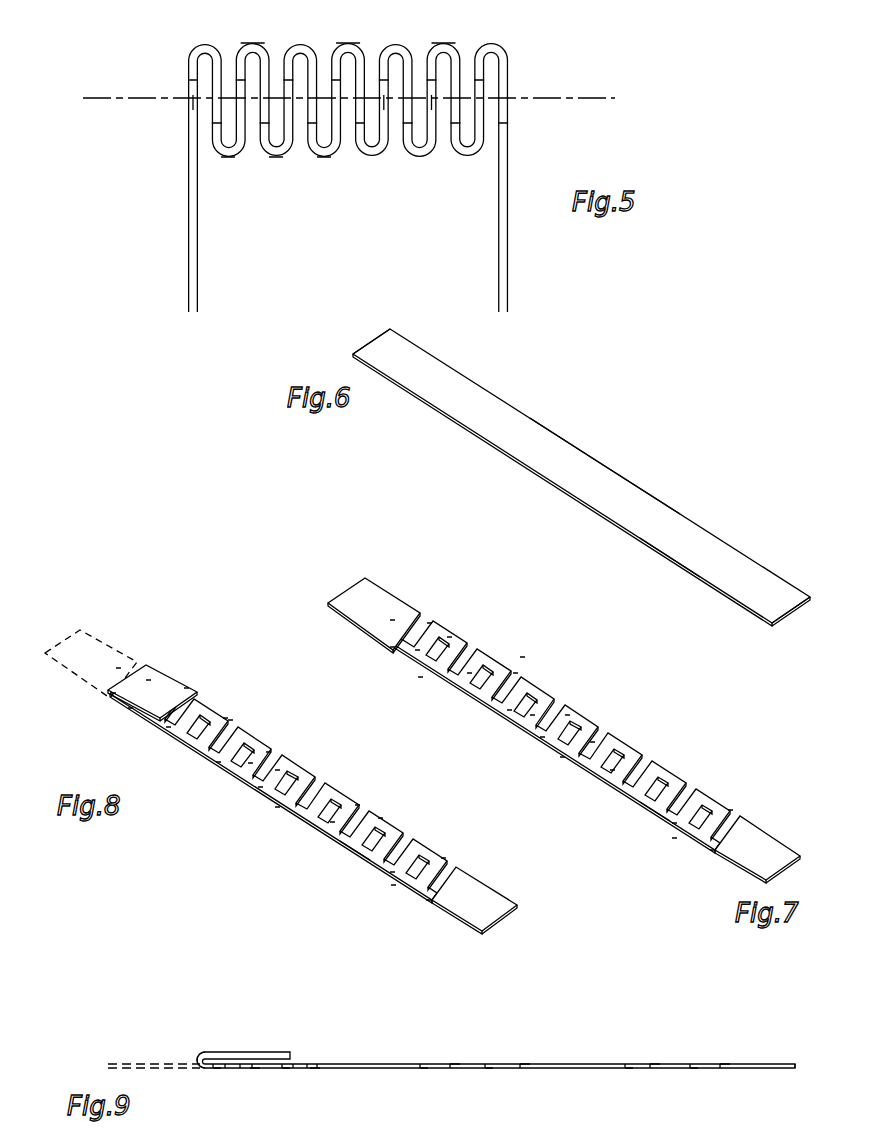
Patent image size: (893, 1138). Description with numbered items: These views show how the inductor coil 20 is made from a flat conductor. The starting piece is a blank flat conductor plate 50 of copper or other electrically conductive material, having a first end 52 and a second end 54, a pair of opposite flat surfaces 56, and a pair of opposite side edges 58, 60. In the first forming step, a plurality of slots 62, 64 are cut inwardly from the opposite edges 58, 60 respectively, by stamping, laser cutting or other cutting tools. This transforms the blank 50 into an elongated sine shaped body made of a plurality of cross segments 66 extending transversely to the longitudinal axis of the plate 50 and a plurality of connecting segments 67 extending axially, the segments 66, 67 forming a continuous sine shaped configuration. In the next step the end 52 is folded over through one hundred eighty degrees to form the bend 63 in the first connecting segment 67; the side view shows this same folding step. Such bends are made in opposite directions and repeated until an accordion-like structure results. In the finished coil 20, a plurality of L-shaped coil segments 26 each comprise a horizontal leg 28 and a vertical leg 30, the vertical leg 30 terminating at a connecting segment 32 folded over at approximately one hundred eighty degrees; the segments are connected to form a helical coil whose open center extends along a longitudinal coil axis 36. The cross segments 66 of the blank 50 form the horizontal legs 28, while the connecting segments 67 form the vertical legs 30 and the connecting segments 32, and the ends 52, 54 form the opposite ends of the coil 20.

In FIG. 5, the inductor coil 20 is at (539, 48).
In FIG. 5, the L-shaped coil segments 26 is at (222, 160).
In FIG. 5, the horizontal leg 28 is at (237, 71).
In FIG. 5, the vertical leg 30 is at (190, 107).
In FIG. 5, the connecting segment 32 is at (252, 43).
In FIG. 5, the longitudinal coil axis 36 is at (598, 97).
In FIG. 6, the blank flat conductor plate 50 is at (546, 484).
In FIG. 9, the blank flat conductor plate 50 is at (496, 1060).
In FIG. 6, the first end 52 is at (372, 345).
In FIG. 7, the first end 52 is at (348, 593).
In FIG. 8, the first end 52 is at (57, 647).
In FIG. 9, the first end 52 is at (112, 1062).
In FIG. 6, the second end 54 is at (790, 603).
In FIG. 7, the second end 54 is at (780, 860).
In FIG. 8, the second end 54 is at (497, 912).
In FIG. 9, the second end 54 is at (790, 1062).
In FIG. 6, the flat surfaces 56 is at (565, 450).
In FIG. 6, the side edge 58 is at (672, 563).
In FIG. 7, the side edge 58 is at (653, 810).
In FIG. 8, the side edge 58 is at (360, 857).
In FIG. 6, the side edge 60 is at (640, 490).
In FIG. 7, the side edge 60 is at (393, 595).
In FIG. 8, the side edge 60 is at (156, 687).
In FIG. 7, the slots 62 is at (415, 650).
In FIG. 8, the slots 62 is at (130, 708).
In FIG. 9, the slots 62 is at (450, 1063).
In FIG. 9, the bend 63 is at (152, 1060).
In FIG. 7, the slots 64 is at (427, 623).
In FIG. 8, the slots 64 is at (148, 680).
In FIG. 7, the cross segments 66 is at (390, 620).
In FIG. 8, the cross segments 66 is at (118, 668).
In FIG. 7, the connecting segments 67 is at (447, 637).
In FIG. 8, the connecting segments 67 is at (113, 693).
In FIG. 9, the connecting segments 67 is at (215, 1069).